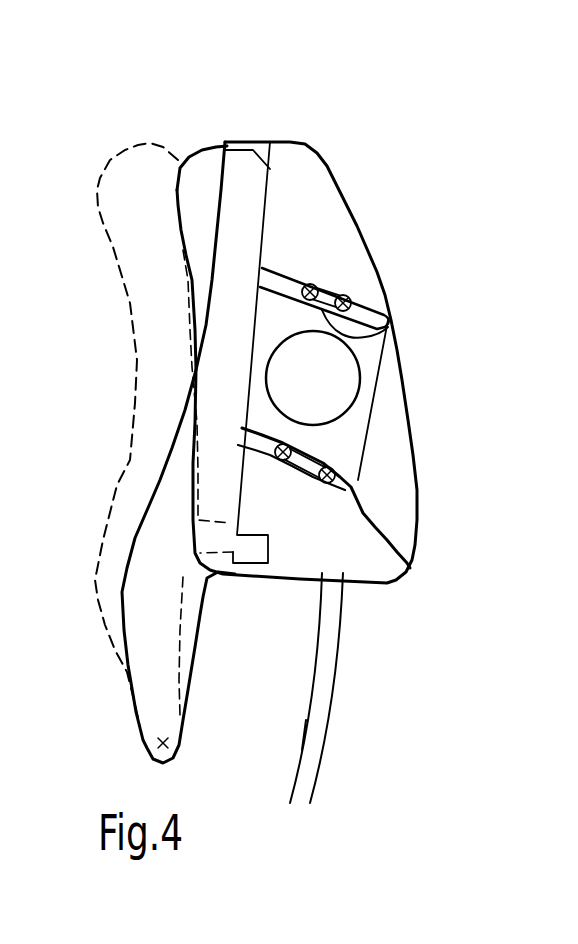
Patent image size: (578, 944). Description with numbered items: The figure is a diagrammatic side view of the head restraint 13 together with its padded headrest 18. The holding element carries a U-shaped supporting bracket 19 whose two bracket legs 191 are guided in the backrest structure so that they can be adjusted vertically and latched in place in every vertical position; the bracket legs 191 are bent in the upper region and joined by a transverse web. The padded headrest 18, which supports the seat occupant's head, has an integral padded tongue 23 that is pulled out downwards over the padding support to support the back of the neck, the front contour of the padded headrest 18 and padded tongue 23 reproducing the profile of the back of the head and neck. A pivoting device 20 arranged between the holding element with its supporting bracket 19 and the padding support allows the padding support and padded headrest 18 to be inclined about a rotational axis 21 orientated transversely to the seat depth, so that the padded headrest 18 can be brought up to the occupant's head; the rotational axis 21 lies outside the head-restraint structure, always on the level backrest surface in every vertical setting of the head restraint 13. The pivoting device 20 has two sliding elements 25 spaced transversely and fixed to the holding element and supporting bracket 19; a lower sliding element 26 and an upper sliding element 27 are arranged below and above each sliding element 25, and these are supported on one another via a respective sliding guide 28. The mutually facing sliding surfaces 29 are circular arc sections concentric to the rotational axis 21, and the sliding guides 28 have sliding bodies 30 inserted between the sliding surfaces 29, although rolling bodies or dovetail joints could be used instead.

The head restraint 13 is at (344, 332).
The padded headrest 18 is at (202, 202).
The supporting bracket 19 is at (345, 697).
The bracket legs 191 is at (310, 732).
The pivoting device 20 is at (226, 448).
The rotational axis 21 is at (157, 744).
The padded tongue 23 is at (163, 607).
The sliding element 25 is at (357, 420).
The lower sliding element 26 is at (345, 545).
The upper sliding element 27 is at (333, 271).
The sliding guide 28 is at (380, 300).
The sliding surfaces 29 is at (295, 278).
The sliding bodies 30 is at (349, 297).